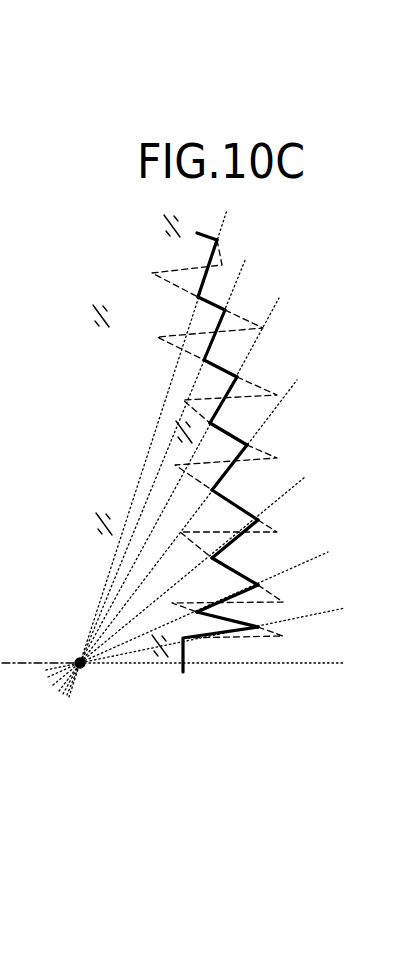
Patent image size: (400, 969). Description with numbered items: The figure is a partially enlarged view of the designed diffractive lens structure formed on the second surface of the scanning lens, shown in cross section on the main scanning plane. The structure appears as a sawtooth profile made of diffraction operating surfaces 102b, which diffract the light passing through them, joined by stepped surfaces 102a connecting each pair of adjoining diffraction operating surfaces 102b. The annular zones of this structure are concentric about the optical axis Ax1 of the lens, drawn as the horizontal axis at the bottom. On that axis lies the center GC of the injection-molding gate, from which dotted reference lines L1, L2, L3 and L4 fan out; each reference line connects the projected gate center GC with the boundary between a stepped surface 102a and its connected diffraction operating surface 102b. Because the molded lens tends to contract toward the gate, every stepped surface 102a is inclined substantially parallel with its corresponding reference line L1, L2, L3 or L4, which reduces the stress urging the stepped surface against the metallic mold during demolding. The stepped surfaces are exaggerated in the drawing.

The stepped surface 102a is at (238, 536).
The diffraction operating surface 102b is at (228, 498).
The reference line L1 is at (206, 633).
The reference line L2 is at (200, 606).
The reference line L3 is at (194, 572).
The reference line L4 is at (190, 527).
The optical axis Ax1 is at (173, 681).
The center of the gate GC is at (84, 668).